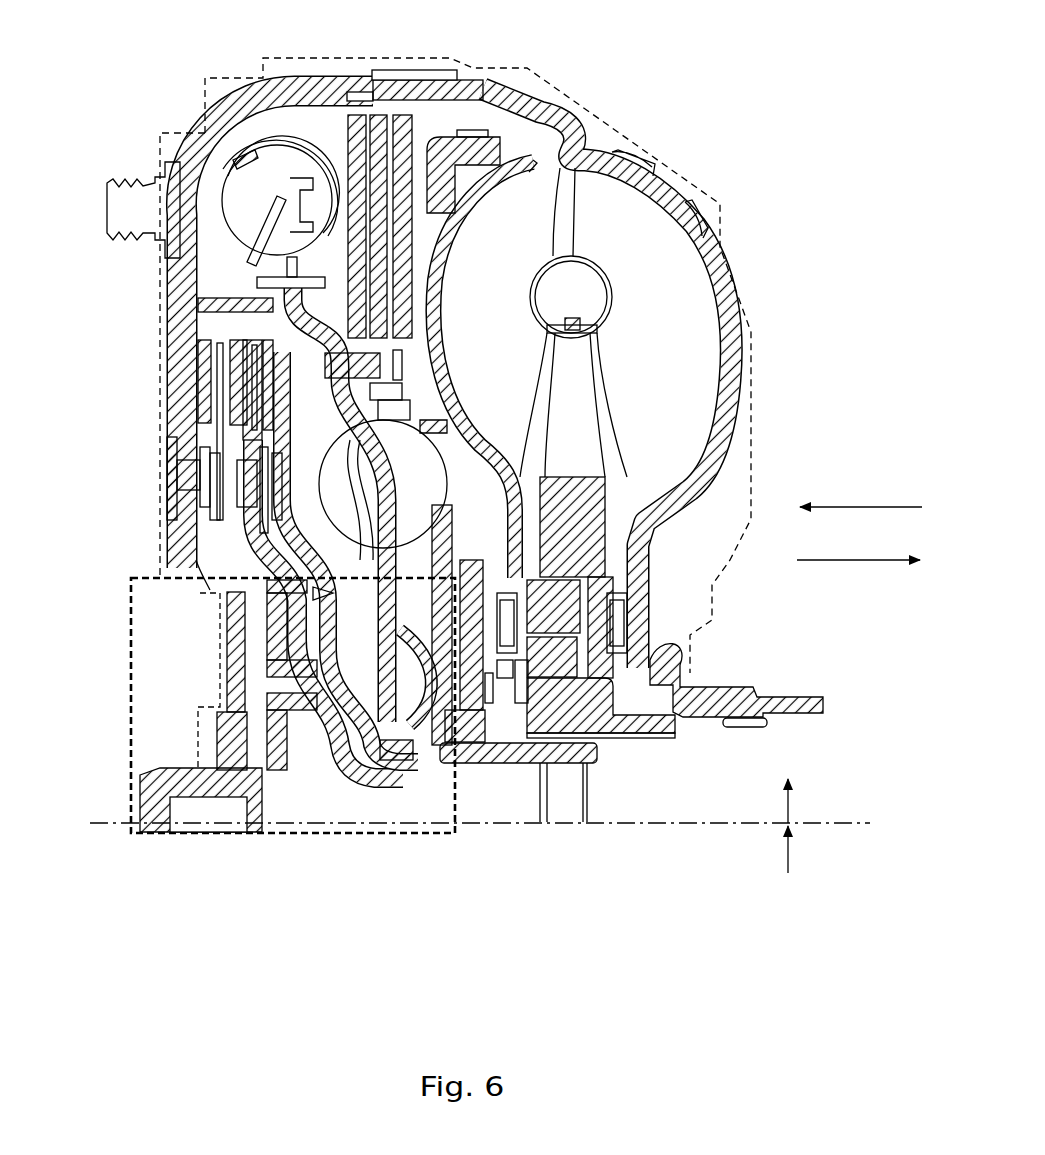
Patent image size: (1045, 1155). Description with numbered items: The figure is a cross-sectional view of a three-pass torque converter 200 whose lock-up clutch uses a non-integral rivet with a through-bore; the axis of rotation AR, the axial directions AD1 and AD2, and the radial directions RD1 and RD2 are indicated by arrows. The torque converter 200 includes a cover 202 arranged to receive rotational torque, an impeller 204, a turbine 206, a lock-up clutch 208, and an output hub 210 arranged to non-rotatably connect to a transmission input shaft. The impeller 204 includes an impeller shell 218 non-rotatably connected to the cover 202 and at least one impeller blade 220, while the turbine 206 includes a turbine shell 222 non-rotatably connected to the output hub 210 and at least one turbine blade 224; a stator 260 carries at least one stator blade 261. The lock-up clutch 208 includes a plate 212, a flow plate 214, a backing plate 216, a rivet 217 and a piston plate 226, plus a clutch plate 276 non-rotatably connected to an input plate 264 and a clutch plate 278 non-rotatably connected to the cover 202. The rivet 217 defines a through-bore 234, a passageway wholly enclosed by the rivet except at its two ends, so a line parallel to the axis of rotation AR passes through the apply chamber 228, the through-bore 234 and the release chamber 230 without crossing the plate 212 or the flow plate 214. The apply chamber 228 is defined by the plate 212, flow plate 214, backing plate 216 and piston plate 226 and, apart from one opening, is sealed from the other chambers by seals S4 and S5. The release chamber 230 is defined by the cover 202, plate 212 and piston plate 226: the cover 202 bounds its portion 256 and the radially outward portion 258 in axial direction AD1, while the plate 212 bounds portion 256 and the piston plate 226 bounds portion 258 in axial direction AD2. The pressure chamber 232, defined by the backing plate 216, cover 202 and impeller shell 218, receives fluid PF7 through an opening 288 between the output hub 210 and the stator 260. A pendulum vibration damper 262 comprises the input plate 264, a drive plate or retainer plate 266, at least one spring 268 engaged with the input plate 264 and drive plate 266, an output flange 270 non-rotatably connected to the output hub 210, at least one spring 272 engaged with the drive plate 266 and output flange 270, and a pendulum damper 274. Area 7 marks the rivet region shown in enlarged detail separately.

The torque converter 200 is at (755, 96).
The cover 202 is at (300, 77).
The impeller 204 is at (726, 251).
The turbine 206 is at (522, 152).
The lock-up clutch 208 is at (183, 389).
The output hub 210 is at (585, 766).
The plate 212 is at (282, 754).
The flow plate 214 is at (330, 766).
The backing plate 216 is at (360, 772).
The rivet 217 is at (250, 694).
The impeller shell 218 is at (705, 278).
The impeller blade 220 is at (671, 306).
The turbine shell 222 is at (492, 175).
The turbine blade 224 is at (503, 312).
The piston plate 226 is at (278, 350).
The apply chamber 228 is at (280, 568).
The release chamber 230 is at (222, 537).
The pressure chamber 232 is at (423, 133).
The through-bore 234 is at (250, 680).
The portion of release chamber 256 is at (255, 622).
The portion of release chamber 258 is at (230, 513).
The stator 260 is at (613, 549).
The stator blade 261 is at (582, 397).
The pendulum vibration damper 262 is at (213, 128).
The input plate 264 is at (258, 220).
The drive plate/retainer plate 266 is at (260, 148).
The spring 268 is at (238, 138).
The output flange 270 is at (405, 750).
The spring 272 is at (440, 456).
The pendulum damper 274 is at (380, 114).
The clutch plate 276 is at (198, 302).
The clutch plate 278 is at (200, 406).
The opening 288 is at (595, 742).
The seal S4 is at (250, 590).
The seal S5 is at (250, 292).
The fluid PF7 is at (505, 726).
The axial direction AD1 is at (836, 507).
The axial direction AD2 is at (856, 560).
The radial direction RD1 is at (790, 810).
The radial direction RD2 is at (790, 853).
The axis of rotation AR is at (840, 823).
The area 7 is at (131, 693).